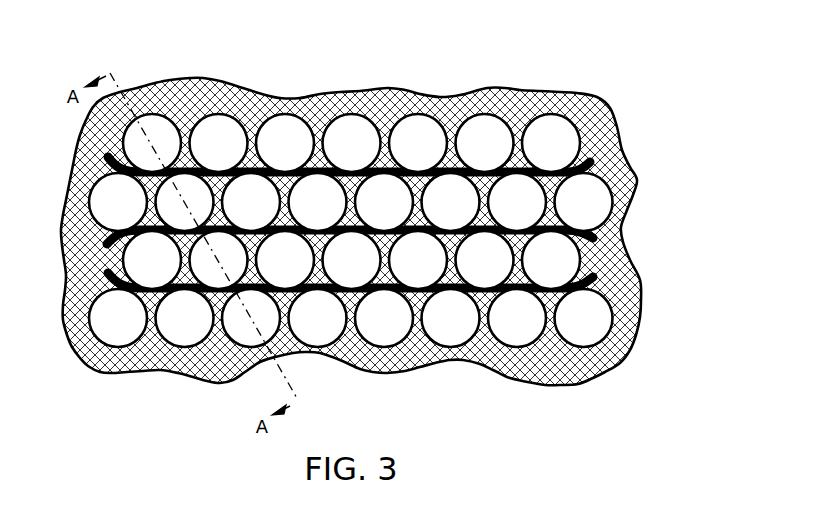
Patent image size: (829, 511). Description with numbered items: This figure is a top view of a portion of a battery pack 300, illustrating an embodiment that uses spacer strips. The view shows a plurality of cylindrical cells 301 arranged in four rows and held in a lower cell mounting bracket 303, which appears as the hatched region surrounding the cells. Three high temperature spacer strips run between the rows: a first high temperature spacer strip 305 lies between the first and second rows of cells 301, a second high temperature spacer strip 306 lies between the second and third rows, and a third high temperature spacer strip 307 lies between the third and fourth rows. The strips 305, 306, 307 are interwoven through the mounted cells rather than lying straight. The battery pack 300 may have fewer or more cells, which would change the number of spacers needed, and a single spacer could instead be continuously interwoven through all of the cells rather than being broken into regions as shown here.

The battery pack 300 is at (620, 62).
The cylindrical cells 301 is at (136, 152).
The lower cell mounting bracket 303 is at (372, 100).
The first high temperature spacer strip 305 is at (580, 160).
The second high temperature spacer strip 306 is at (596, 238).
The third high temperature spacer strip 307 is at (597, 281).